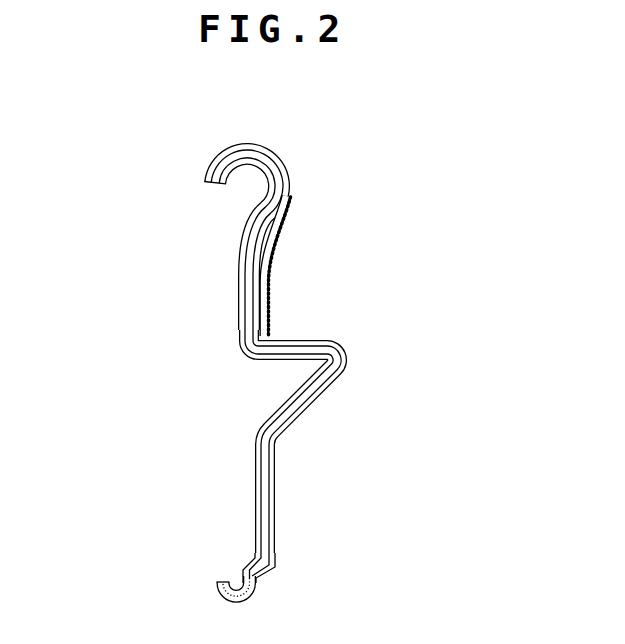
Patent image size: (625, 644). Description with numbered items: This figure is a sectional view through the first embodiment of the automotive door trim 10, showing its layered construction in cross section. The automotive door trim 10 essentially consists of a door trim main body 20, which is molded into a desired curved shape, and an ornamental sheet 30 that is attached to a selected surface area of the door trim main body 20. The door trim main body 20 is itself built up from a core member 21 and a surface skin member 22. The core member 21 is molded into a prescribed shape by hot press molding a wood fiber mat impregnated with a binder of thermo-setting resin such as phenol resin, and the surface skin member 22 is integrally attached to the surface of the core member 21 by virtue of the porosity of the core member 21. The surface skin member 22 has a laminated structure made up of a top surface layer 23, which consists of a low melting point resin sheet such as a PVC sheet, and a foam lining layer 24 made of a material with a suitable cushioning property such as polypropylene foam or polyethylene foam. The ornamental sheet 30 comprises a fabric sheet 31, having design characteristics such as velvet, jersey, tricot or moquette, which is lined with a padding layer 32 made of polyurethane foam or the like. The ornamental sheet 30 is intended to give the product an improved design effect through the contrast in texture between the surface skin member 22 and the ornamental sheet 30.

The automotive door trim 10 is at (259, 375).
The door trim main body 20 is at (189, 463).
The core member 21 is at (255, 462).
The surface skin member 22 is at (188, 542).
The top surface layer 23 is at (255, 512).
The foam lining layer 24 is at (248, 548).
The ornamental sheet 30 is at (340, 245).
The fabric sheet 31 is at (282, 233).
The padding layer 32 is at (267, 280).